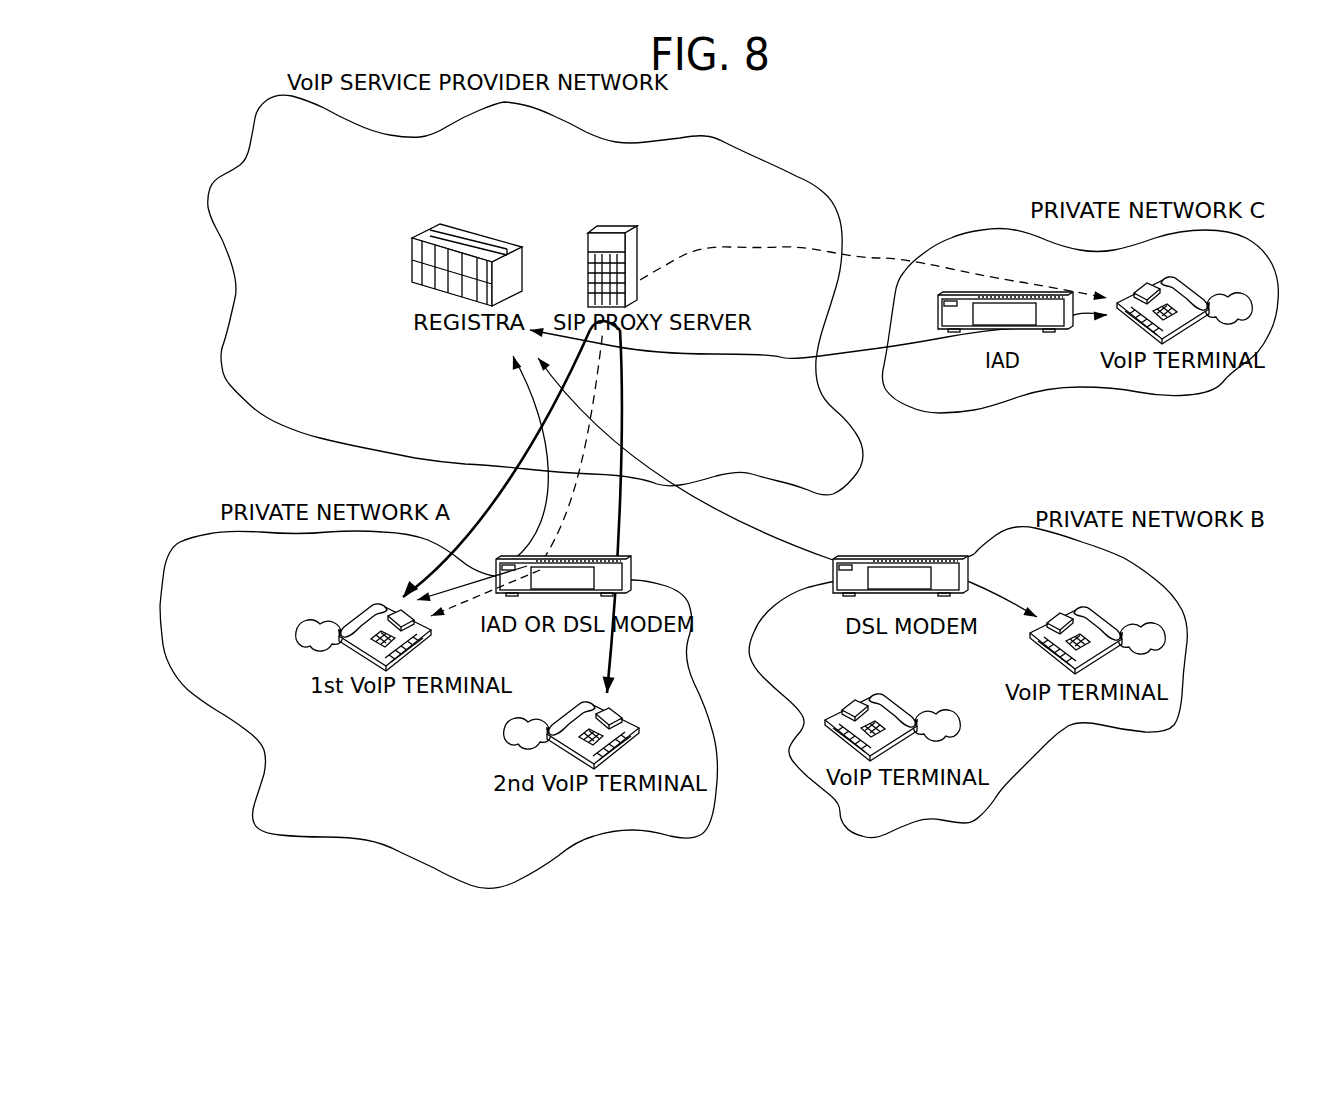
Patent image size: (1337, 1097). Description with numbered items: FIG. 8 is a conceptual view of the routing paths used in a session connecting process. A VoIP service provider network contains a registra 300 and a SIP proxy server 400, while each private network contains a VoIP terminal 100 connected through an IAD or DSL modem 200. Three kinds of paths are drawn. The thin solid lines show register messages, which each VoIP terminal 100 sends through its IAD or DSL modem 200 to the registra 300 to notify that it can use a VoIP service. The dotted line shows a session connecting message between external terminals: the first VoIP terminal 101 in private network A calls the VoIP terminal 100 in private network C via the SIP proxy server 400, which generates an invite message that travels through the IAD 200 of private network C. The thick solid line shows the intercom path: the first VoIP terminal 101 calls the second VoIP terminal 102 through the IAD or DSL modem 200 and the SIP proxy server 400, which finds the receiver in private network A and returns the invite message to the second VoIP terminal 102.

The VoIP terminal 100 is at (1188, 286).
The first VoIP terminal 101 is at (365, 608).
The second VoIP terminal 102 is at (571, 704).
The IAD or DSL modem 200 is at (596, 551).
The registra 300 is at (498, 239).
The SIP proxy server 400 is at (630, 229).